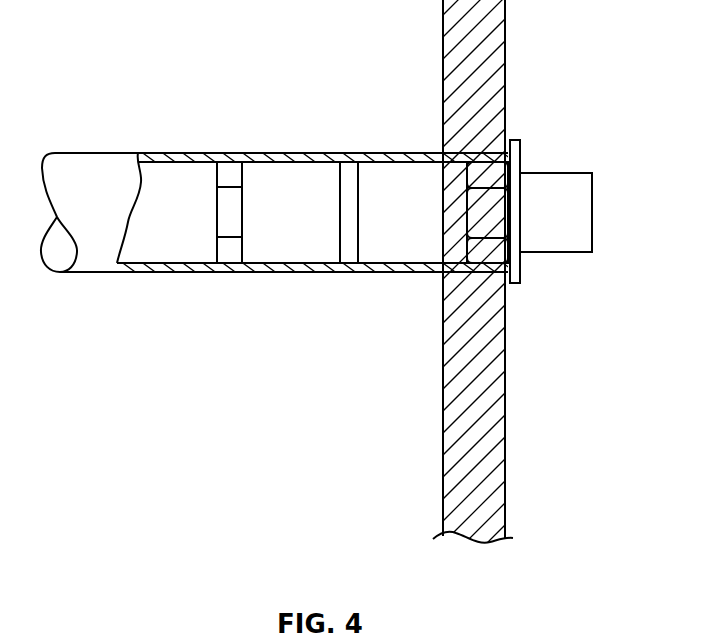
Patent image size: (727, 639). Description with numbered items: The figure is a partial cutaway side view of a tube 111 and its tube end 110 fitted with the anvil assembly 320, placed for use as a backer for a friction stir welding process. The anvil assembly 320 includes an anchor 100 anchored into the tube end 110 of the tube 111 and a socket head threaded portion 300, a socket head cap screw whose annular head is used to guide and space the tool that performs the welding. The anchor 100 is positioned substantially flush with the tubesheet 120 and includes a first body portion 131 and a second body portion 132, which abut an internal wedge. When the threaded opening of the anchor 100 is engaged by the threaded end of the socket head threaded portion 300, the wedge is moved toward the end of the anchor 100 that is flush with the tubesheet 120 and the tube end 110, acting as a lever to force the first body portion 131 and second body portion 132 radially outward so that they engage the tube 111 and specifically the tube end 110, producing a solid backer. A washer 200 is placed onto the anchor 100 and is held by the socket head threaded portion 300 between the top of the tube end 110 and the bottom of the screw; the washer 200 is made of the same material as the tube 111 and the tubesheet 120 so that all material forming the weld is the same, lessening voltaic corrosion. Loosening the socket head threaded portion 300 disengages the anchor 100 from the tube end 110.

The anchor 100 is at (290, 253).
The tube end 110 is at (512, 165).
The tube 111 is at (90, 263).
The tubesheet 120 is at (490, 385).
The first body portion 131 is at (297, 170).
The second body portion 132 is at (402, 253).
The washer 200 is at (513, 286).
The socket head threaded portion 300 is at (580, 205).
The anvil assembly 320 is at (383, 170).